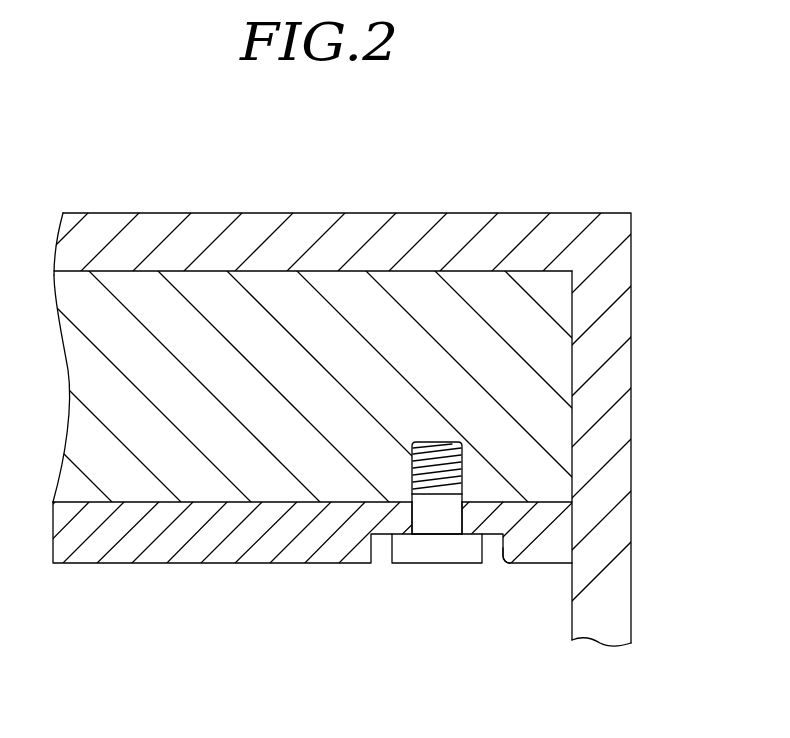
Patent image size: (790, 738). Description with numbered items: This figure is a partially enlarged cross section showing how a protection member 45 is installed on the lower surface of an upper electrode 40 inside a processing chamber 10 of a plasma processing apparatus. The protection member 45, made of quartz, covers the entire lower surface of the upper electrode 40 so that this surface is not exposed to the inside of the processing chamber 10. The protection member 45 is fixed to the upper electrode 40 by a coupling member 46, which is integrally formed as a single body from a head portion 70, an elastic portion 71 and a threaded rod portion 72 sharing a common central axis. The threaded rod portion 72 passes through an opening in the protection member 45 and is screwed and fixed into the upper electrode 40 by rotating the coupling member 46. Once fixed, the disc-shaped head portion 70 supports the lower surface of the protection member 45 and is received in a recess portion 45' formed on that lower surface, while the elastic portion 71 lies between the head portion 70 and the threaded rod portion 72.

The processing chamber 10 is at (631, 353).
The upper electrode 40 is at (290, 296).
The protection member 45 is at (290, 559).
The recess portion 45' is at (512, 588).
The coupling member 46 is at (487, 480).
The head portion 70 is at (402, 564).
The elastic portion 71 is at (453, 522).
The threaded rod portion 72 is at (457, 442).